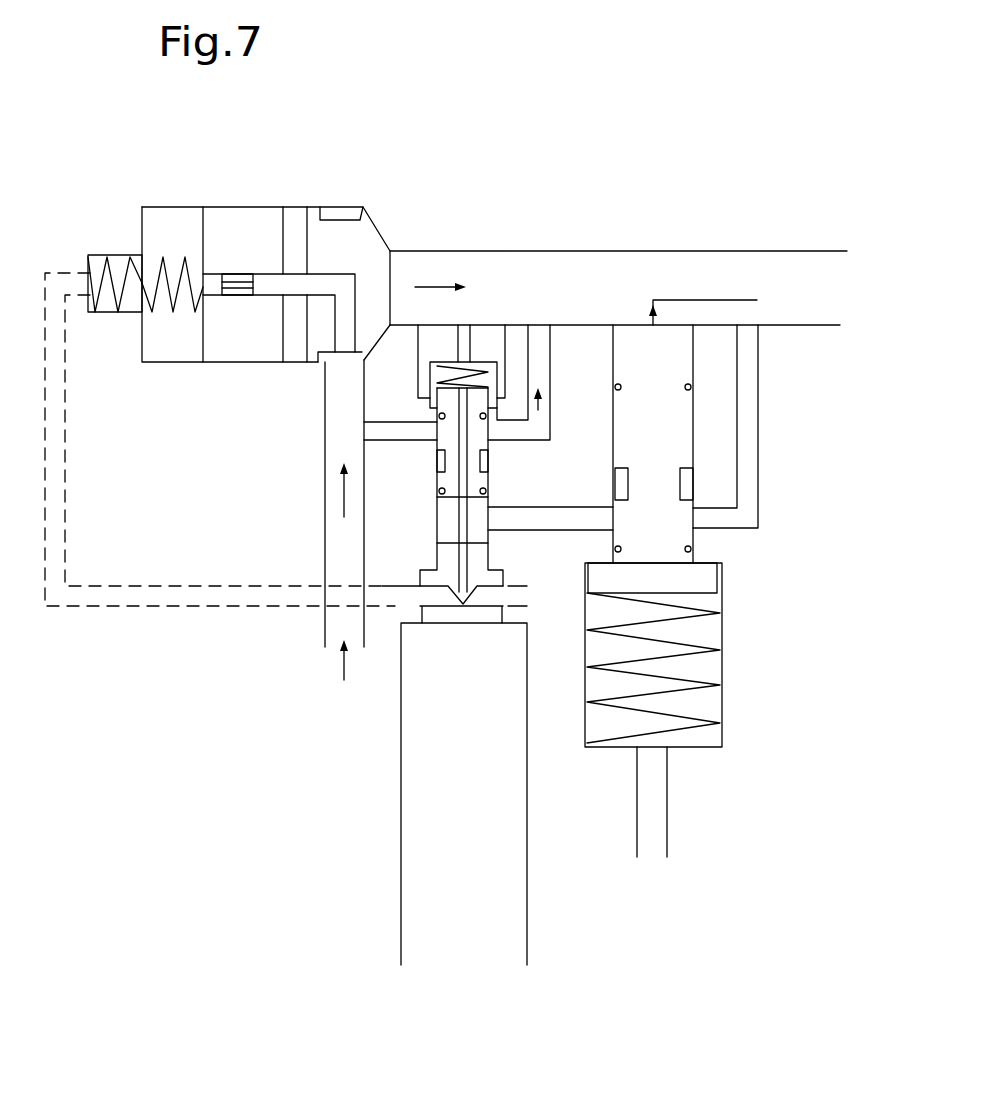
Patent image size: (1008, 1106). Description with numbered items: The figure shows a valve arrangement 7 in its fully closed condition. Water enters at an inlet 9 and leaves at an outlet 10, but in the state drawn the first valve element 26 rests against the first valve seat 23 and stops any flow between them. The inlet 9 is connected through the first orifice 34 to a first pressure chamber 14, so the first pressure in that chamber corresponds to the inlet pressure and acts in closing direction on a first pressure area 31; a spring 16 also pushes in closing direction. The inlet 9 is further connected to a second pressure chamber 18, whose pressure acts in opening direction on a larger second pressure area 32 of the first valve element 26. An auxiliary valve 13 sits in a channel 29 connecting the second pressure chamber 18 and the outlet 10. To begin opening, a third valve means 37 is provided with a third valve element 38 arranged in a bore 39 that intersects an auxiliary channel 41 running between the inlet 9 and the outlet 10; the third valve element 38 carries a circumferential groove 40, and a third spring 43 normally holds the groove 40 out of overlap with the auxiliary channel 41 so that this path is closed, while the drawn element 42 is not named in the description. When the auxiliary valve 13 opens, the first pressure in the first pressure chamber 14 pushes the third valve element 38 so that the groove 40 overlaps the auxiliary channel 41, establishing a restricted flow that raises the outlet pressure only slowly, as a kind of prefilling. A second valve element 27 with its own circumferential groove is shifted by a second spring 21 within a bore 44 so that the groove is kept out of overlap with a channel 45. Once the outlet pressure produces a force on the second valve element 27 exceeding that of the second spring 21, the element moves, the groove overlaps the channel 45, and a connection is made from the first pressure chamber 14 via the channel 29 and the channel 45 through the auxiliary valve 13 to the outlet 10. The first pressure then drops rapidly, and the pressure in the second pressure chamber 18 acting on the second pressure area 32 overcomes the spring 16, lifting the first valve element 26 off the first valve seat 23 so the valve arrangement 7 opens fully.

The valve arrangement 7 is at (494, 150).
The inlet 9 is at (337, 530).
The outlet 10 is at (668, 265).
The auxiliary valve 13 is at (446, 622).
The first pressure chamber 14 is at (165, 222).
The spring 16 is at (97, 272).
The second pressure chamber 18 is at (332, 358).
The second spring 21 is at (695, 692).
The first valve seat 23 is at (387, 242).
The first valve element 26 is at (365, 242).
The second valve element 27 is at (675, 428).
The channel 29 is at (178, 608).
The first pressure area 31 is at (200, 232).
The second pressure area 32 is at (322, 215).
The first orifice 34 is at (237, 296).
The third valve means 37 is at (511, 474).
The third valve element 38 is at (475, 483).
The bore 39 is at (437, 487).
The circumferential groove 40 is at (437, 455).
The auxiliary channel 41 is at (537, 360).
The spring housing 42 is at (440, 363).
The third spring 43 is at (615, 482).
The bore 44 is at (695, 427).
The channel 45 is at (748, 503).